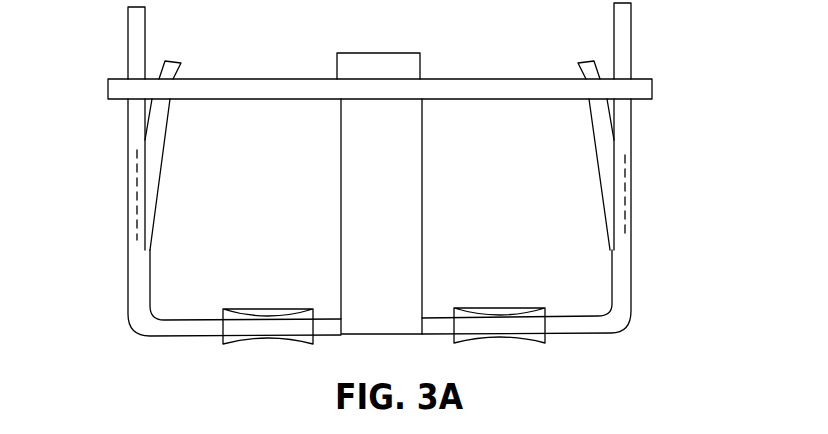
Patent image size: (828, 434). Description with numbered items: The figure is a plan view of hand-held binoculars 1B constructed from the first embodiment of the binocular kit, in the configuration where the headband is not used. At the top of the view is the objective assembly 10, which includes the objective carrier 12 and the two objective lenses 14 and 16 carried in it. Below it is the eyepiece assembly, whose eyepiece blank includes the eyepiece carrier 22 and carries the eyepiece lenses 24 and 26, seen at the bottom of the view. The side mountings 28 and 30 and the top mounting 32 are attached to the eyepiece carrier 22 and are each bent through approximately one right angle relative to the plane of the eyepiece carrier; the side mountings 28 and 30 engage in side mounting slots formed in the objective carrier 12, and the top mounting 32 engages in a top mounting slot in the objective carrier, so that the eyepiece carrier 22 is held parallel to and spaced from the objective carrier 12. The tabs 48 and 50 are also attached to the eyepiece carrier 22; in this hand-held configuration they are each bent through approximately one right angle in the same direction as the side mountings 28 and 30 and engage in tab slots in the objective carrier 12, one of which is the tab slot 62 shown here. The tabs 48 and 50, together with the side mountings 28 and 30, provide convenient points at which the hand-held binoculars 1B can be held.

The objective assembly 10 is at (663, 85).
The objective carrier 12 is at (400, 77).
The objective lens 14 is at (527, 77).
The objective lens 16 is at (263, 79).
The eyepiece carrier 22 is at (568, 332).
The eyepiece lens 24 is at (512, 310).
The eyepiece lens 26 is at (262, 320).
The side mounting 28 is at (175, 133).
The side mounting 30 is at (600, 150).
The top mounting 32 is at (423, 180).
The tab 48 is at (128, 150).
The tab 50 is at (628, 153).
The tab slot 62 is at (125, 103).
The hand-held binoculars 1B is at (642, 272).